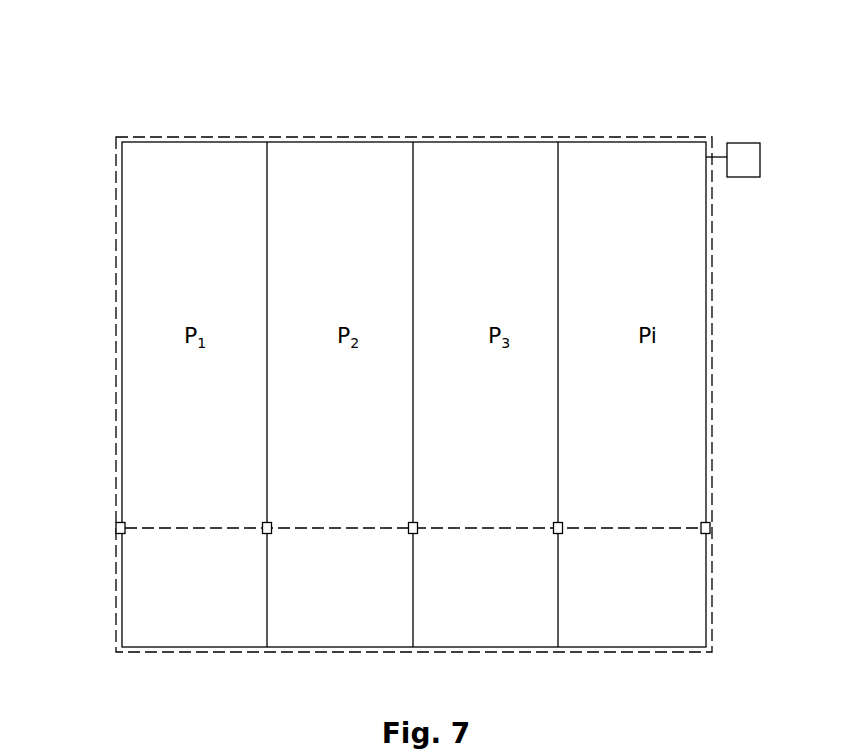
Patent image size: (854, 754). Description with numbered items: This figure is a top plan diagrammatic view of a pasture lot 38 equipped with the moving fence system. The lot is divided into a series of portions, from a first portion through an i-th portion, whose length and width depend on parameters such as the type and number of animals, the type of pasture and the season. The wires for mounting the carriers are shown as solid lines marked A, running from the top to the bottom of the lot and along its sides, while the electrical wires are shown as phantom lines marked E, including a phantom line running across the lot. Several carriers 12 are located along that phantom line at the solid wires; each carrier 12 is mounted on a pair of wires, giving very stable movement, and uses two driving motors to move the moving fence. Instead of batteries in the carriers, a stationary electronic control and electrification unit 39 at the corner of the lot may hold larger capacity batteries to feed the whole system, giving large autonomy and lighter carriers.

The pasture lot 38 is at (78, 122).
The electronic control and electrification unit 39 is at (745, 143).
The carrier 12 is at (114, 528).
The wires for mounting carriers A is at (126, 193).
The electrical wires E is at (110, 398).